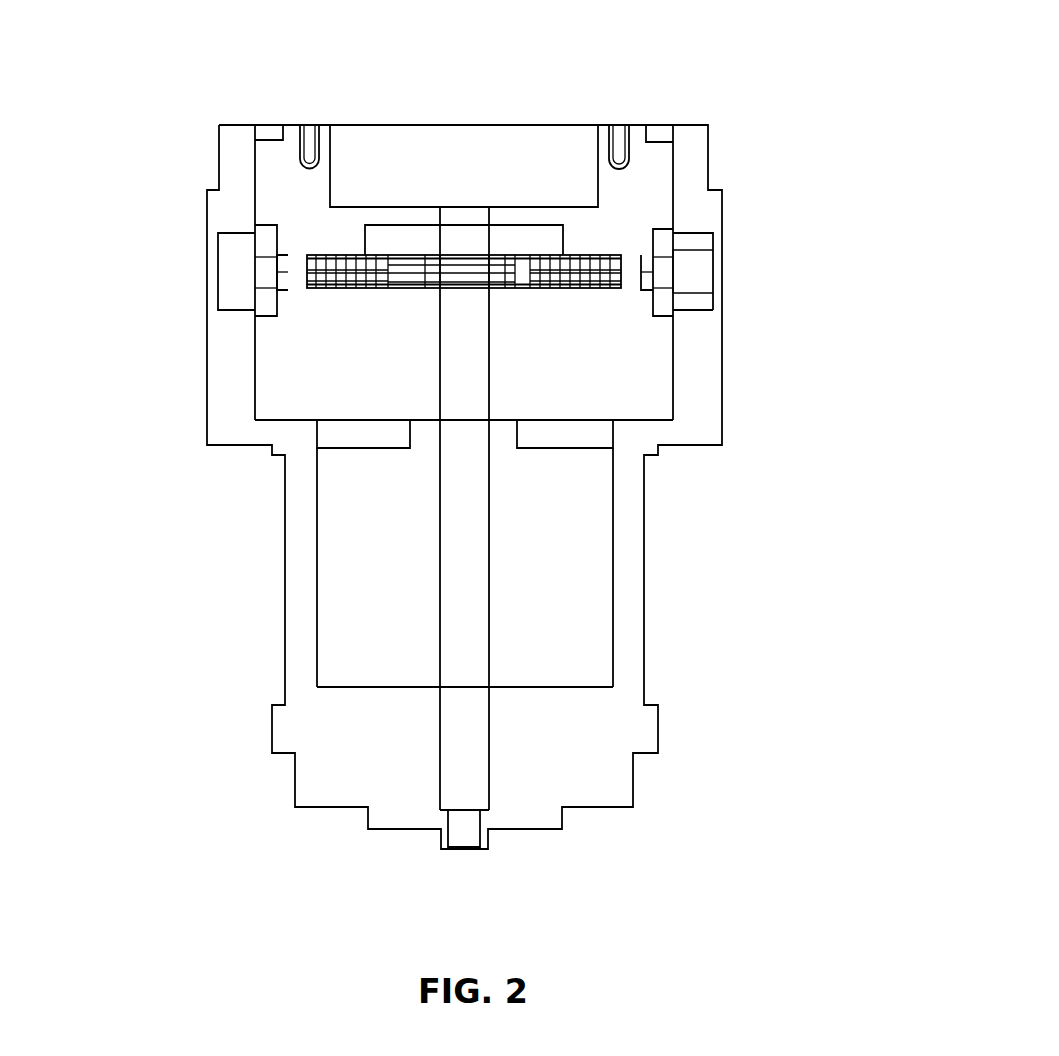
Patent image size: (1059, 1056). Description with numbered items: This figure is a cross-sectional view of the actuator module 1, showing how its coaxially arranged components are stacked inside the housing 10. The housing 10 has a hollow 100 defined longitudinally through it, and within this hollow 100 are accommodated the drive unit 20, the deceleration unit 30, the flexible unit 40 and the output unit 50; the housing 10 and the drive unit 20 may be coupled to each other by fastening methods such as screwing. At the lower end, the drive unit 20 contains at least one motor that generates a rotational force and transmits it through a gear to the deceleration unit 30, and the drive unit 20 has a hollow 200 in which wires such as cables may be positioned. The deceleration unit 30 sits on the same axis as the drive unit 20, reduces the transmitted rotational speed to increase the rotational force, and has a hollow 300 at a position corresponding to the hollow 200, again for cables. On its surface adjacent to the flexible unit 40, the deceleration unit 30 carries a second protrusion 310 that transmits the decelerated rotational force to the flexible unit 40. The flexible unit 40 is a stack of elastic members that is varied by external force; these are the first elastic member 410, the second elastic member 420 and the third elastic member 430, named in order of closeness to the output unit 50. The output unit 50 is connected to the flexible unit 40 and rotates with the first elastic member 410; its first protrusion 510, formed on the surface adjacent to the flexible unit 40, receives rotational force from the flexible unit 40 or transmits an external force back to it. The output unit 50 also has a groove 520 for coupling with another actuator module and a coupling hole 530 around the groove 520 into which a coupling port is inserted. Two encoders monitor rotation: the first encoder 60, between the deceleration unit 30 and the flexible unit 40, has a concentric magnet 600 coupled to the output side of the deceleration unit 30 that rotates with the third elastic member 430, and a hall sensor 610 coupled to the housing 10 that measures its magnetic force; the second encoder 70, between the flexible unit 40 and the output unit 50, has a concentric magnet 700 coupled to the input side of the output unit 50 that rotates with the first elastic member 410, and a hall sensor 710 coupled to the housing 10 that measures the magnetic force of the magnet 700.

The actuator module 1 is at (742, 30).
The housing 10 is at (646, 642).
The drive unit 20 is at (568, 563).
The deceleration unit 30 is at (638, 397).
The second protrusion 310 is at (630, 285).
The flexible unit 40 is at (103, 238).
The first elastic member 410 is at (283, 277).
The second elastic member 420 is at (283, 279).
The third elastic member 430 is at (283, 282).
The output unit 50 is at (636, 190).
The first protrusion 510 is at (530, 262).
The groove 520 is at (499, 163).
The coupling hole 530 is at (616, 120).
The first encoder 60 is at (818, 297).
The magnet 600 is at (675, 335).
The hall sensor 610 is at (703, 302).
The second encoder 70 is at (818, 198).
The magnet 700 is at (655, 240).
The hall sensor 710 is at (662, 263).
The hollow 100 is at (460, 746).
The hollow 200 is at (467, 573).
The hollow 300 is at (468, 383).